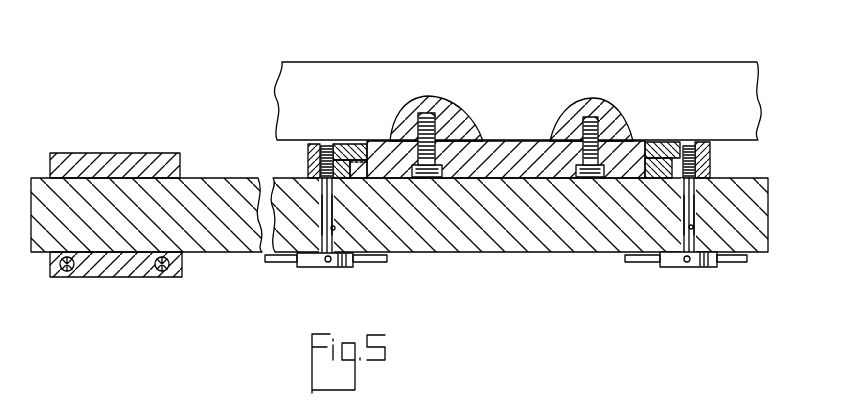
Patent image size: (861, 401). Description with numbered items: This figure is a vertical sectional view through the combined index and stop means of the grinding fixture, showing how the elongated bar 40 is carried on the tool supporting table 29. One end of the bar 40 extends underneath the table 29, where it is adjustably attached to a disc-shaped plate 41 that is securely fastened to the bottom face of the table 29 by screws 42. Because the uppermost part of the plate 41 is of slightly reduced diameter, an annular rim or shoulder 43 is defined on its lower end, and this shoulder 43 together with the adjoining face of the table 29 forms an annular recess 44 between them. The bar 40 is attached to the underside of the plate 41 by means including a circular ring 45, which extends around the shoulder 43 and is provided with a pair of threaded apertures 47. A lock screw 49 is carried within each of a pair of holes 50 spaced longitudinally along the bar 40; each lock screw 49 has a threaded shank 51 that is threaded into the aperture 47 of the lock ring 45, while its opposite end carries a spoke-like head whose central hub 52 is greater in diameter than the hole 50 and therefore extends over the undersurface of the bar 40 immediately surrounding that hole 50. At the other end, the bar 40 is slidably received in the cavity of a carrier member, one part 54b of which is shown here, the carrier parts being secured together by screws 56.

The tool supporting table 29 is at (682, 72).
The elongated bar 40 is at (227, 251).
The disc-shaped plate 41 is at (523, 141).
The screws 42 is at (437, 152).
The annular rim or shoulder 43 is at (351, 168).
The annular recess 44 is at (347, 144).
The circular ring 45 is at (306, 157).
The threaded apertures 47 is at (350, 161).
The lock screw 49 is at (333, 213).
The holes 50 is at (335, 228).
The threaded shank 51 is at (322, 189).
The central hub 52 is at (310, 266).
The carrier member part 54b is at (107, 159).
The screws 56 is at (70, 272).